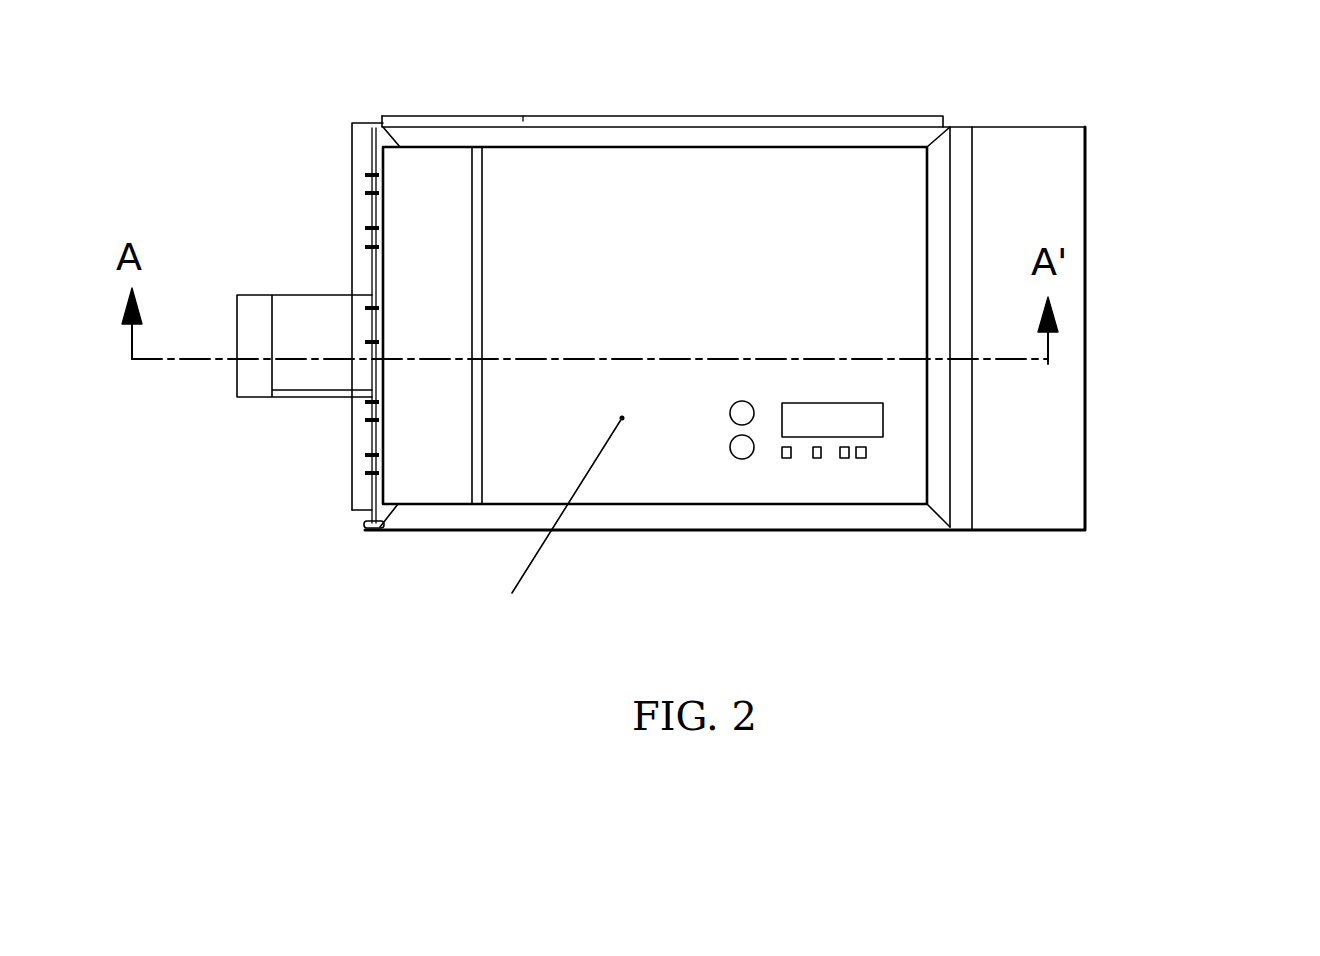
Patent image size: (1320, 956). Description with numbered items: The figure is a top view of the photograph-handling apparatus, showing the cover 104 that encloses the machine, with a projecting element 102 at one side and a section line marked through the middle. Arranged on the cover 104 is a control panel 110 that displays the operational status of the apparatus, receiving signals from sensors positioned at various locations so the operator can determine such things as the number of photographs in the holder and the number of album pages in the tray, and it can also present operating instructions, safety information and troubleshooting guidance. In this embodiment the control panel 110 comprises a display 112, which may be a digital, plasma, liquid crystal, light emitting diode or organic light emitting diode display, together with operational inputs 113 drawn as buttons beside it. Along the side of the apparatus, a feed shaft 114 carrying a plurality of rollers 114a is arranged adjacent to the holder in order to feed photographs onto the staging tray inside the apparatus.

The connector 102 is at (243, 398).
The cover 104 is at (590, 103).
The control panel 110 is at (999, 522).
The display 112 is at (883, 420).
The operational inputs 113 is at (786, 460).
The feed shaft 114 is at (353, 510).
The rollers 114a is at (367, 472).